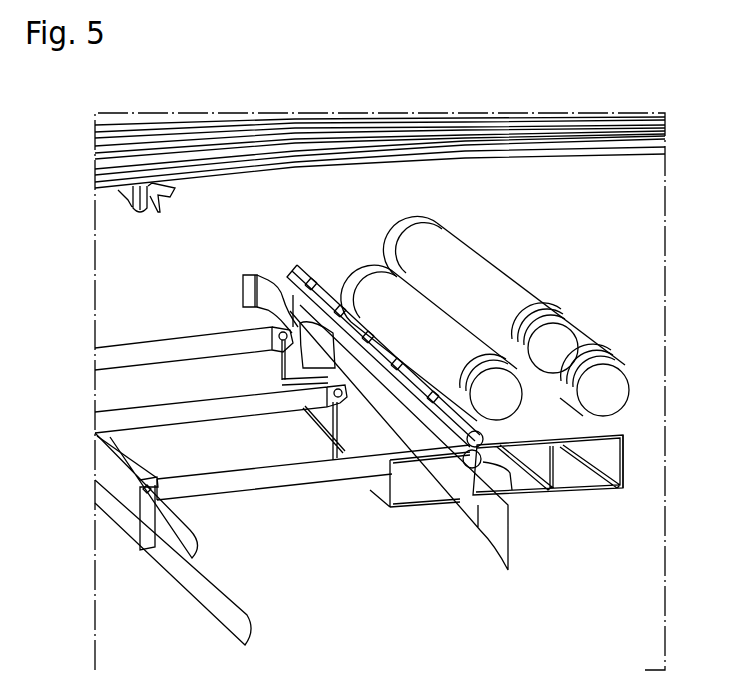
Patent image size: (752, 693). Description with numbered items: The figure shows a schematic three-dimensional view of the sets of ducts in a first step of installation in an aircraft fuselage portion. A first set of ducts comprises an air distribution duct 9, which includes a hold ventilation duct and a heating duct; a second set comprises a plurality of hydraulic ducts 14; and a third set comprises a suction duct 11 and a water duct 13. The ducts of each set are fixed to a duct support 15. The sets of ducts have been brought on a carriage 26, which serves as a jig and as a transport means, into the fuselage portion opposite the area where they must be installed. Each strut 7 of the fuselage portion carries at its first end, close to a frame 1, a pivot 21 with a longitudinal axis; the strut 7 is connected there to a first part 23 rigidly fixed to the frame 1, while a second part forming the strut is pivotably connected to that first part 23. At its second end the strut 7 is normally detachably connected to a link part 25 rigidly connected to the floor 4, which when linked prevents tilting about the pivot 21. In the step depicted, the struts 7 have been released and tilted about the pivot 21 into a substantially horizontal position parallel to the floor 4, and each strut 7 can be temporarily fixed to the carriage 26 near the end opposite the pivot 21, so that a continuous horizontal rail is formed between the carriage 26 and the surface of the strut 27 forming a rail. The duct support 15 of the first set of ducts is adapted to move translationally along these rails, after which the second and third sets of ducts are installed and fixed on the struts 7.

The frame 1 is at (200, 598).
The floor 4 is at (510, 130).
The strut 7 is at (250, 477).
The air distribution duct 9 is at (387, 285).
The suction duct 11 is at (490, 462).
The water duct 13 is at (338, 290).
The hydraulic ducts 14 is at (512, 548).
The duct support 15 is at (560, 420).
The pivot 21 is at (140, 490).
The first part 23 is at (138, 540).
The link part 25 is at (133, 200).
The carriage 26 is at (627, 462).
The surface of the strut forming a rail 27 is at (100, 404).